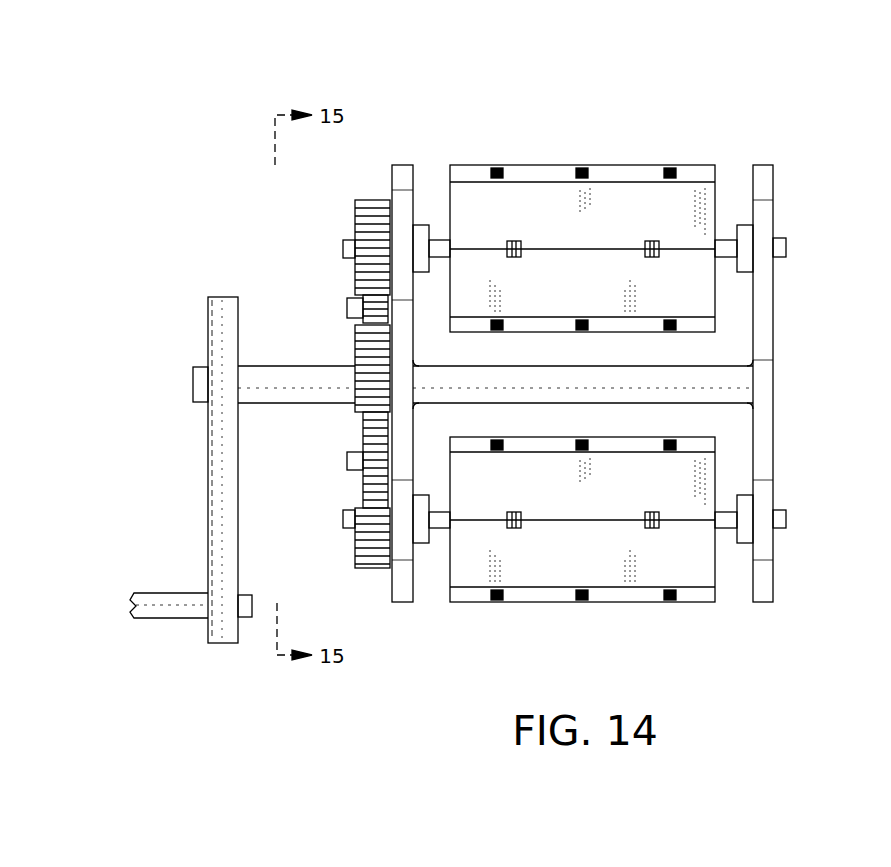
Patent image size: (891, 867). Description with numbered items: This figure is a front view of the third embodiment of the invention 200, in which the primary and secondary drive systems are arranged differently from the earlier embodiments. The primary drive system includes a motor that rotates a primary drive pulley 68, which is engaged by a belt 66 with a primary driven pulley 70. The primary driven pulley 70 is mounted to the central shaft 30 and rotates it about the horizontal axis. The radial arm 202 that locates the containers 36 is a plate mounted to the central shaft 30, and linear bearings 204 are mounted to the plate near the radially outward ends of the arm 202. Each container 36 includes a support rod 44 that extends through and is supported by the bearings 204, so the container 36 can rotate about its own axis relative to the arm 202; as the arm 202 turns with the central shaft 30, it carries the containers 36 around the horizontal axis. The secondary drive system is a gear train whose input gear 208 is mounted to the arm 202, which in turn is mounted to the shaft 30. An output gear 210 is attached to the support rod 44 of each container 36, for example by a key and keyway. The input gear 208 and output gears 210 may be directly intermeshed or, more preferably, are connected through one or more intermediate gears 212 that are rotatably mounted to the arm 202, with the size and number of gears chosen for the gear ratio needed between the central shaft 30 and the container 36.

The third embodiment of the invention 200 is at (513, 112).
The central shaft 30 is at (283, 366).
The container 36 is at (563, 167).
The support rod 44 is at (440, 240).
The belt 66 is at (223, 475).
The primary drive pulley 68 is at (210, 625).
The primary driven pulley 70 is at (208, 427).
The radial arm 202 is at (405, 602).
The linear bearing 204 is at (422, 225).
The input gear 208 is at (368, 385).
The output gear 210 is at (355, 222).
The intermediate gear 212 is at (375, 480).